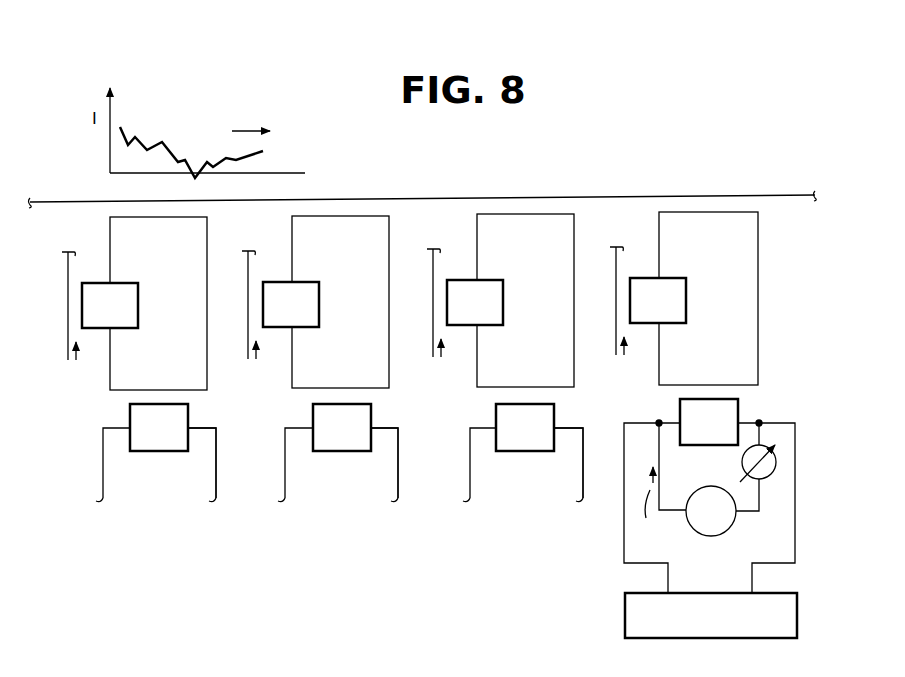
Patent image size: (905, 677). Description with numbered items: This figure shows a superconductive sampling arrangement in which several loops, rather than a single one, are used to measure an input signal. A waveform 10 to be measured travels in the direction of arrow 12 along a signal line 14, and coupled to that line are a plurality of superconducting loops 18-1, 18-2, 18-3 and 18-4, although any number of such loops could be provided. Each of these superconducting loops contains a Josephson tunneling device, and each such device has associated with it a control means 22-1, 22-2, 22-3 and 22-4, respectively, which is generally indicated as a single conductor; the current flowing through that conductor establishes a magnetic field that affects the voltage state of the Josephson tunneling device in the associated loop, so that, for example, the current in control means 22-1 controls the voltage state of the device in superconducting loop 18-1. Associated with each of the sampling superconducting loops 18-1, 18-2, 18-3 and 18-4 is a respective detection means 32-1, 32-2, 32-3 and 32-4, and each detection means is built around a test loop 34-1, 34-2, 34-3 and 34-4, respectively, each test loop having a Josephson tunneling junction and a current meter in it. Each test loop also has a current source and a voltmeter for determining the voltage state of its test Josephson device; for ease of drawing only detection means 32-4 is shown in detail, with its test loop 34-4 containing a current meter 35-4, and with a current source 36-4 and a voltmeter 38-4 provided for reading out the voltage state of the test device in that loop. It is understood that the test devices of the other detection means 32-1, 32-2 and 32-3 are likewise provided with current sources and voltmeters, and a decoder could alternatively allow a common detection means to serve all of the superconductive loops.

The waveform 10 is at (146, 141).
The arrow 12 is at (245, 131).
The signal line 14 is at (655, 197).
The superconducting loop 18-1 is at (106, 394).
The superconducting loop 18-2 is at (288, 392).
The superconducting loop 18-3 is at (474, 391).
The superconducting loop 18-4 is at (764, 357).
The control means 22-1 is at (68, 269).
The control means 22-2 is at (248, 268).
The control means 22-3 is at (433, 266).
The control means 22-4 is at (616, 264).
The detection means 32-1 is at (90, 497).
The detection means 32-2 is at (272, 497).
The detection means 32-3 is at (457, 497).
The detection means 32-4 is at (618, 552).
The test loop 34-1 is at (213, 477).
The test loop 34-2 is at (395, 477).
The test loop 34-3 is at (580, 477).
The test loop 34-4 is at (767, 502).
The current meter 35-4 is at (777, 463).
The current source 36-4 is at (705, 487).
The voltmeter 38-4 is at (625, 618).